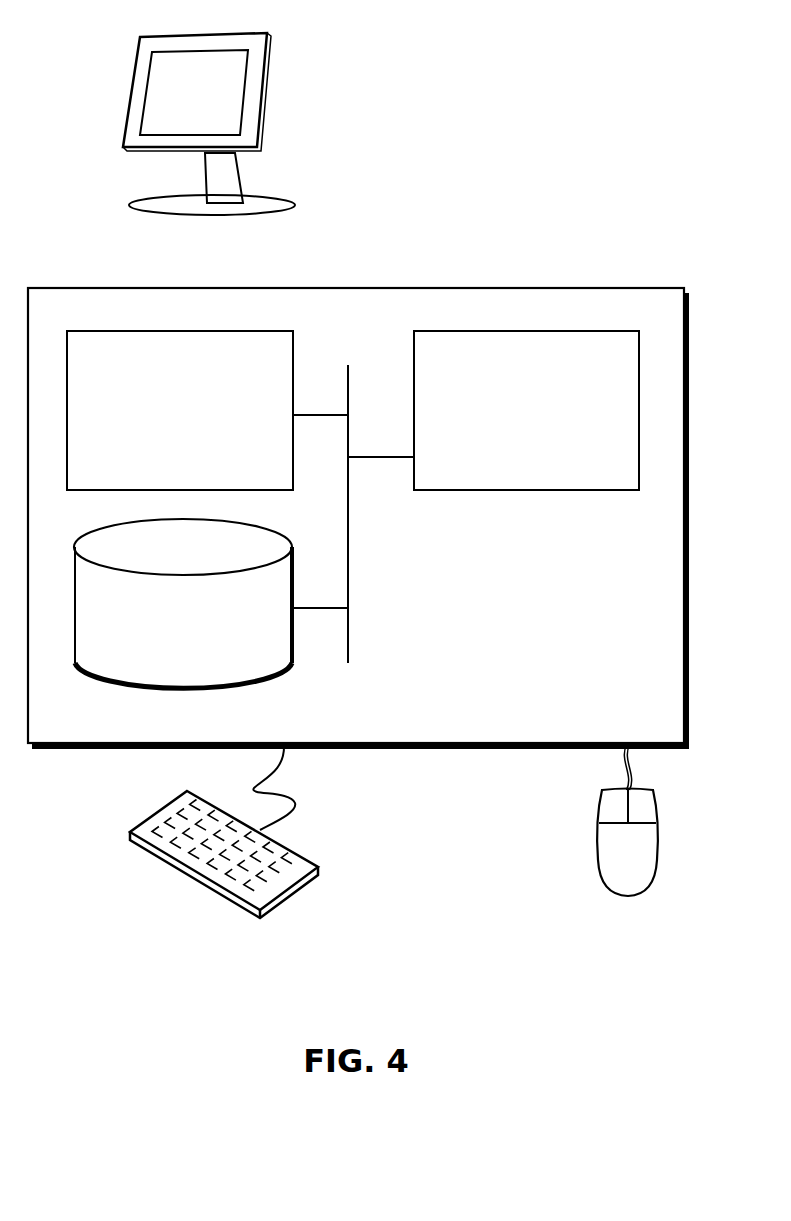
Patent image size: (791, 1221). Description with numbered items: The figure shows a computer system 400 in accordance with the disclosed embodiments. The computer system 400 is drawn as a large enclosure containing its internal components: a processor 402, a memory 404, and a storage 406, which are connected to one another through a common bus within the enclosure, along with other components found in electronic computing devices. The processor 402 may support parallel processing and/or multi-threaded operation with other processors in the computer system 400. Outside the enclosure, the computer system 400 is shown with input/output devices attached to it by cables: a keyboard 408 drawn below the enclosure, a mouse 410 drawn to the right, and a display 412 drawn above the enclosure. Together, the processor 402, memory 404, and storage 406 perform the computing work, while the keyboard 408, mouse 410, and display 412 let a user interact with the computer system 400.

The computer system 400 is at (403, 268).
The processor 402 is at (508, 423).
The memory 404 is at (158, 423).
The storage 406 is at (165, 633).
The keyboard 408 is at (152, 855).
The mouse 410 is at (607, 865).
The display 412 is at (176, 162).